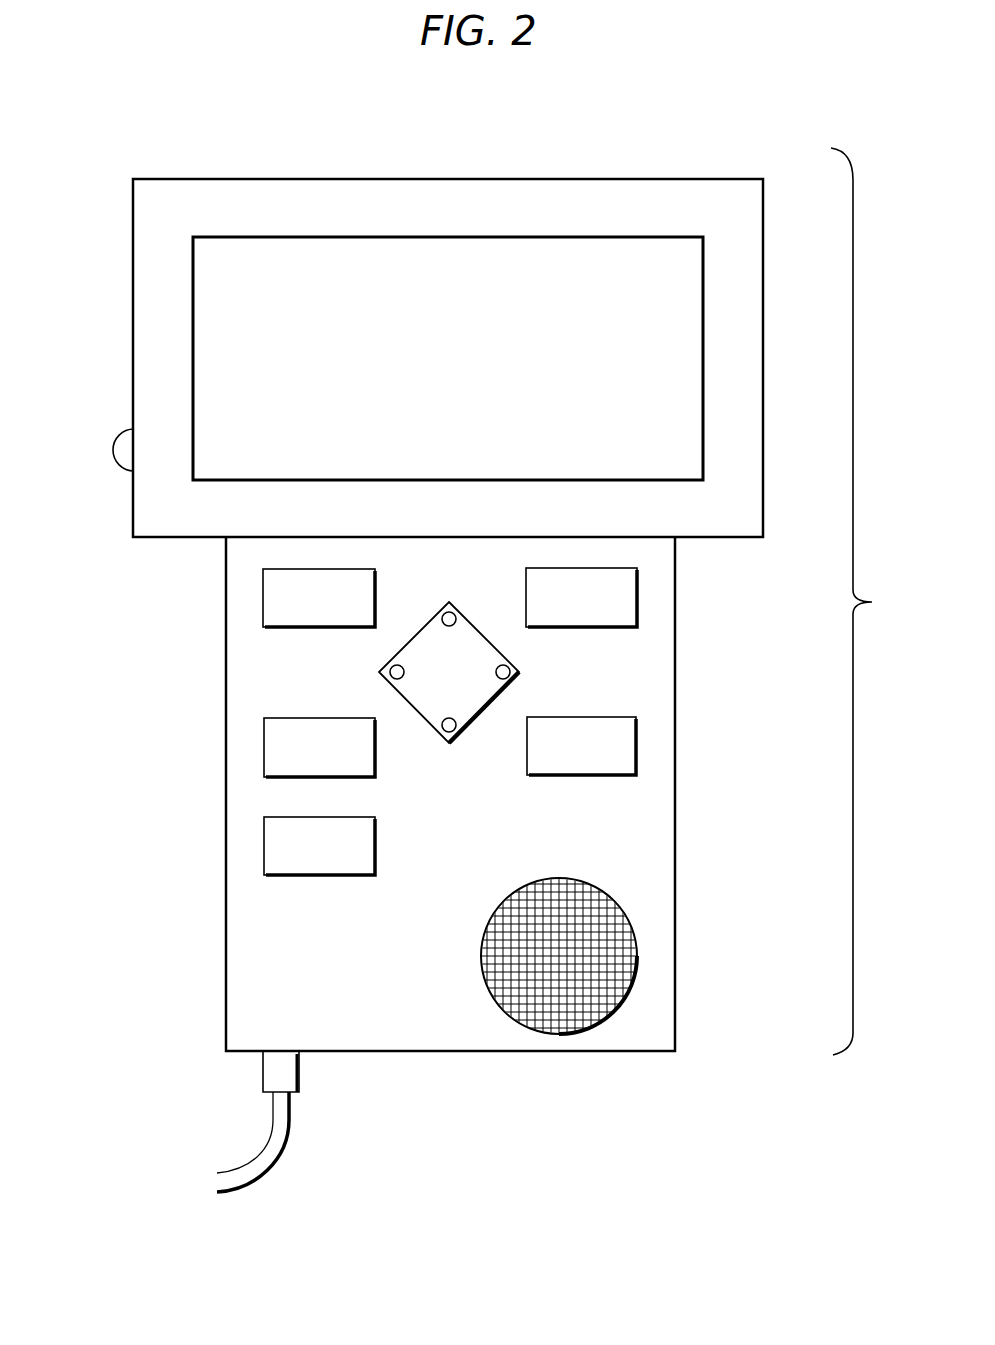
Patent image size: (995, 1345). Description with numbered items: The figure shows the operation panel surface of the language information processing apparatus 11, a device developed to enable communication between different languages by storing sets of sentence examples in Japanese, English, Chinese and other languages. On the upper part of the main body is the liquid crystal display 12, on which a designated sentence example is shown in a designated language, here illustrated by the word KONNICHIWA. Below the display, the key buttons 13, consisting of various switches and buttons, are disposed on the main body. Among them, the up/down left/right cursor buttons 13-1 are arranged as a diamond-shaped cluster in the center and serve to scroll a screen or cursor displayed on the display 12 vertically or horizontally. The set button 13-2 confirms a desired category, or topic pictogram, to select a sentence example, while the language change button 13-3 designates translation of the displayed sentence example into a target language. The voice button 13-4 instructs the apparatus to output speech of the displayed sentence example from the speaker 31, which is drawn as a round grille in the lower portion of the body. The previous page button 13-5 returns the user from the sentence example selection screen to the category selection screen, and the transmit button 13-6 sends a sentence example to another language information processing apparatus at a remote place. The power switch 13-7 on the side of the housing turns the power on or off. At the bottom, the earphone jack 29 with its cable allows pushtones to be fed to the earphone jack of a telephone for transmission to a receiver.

The language information processing apparatus 11 is at (183, 178).
The liquid crystal display 12 is at (604, 260).
The key buttons 13 is at (874, 601).
The up/down left/right cursor buttons 13-1 is at (520, 675).
The set button 13-2 is at (262, 600).
The language change button 13-3 is at (637, 597).
The voice button 13-4 is at (263, 750).
The previous page button 13-5 is at (636, 749).
The transmit button 13-6 is at (263, 850).
The power switch 13-7 is at (112, 450).
The earphone jack 29 is at (300, 1078).
The speaker 31 is at (637, 957).